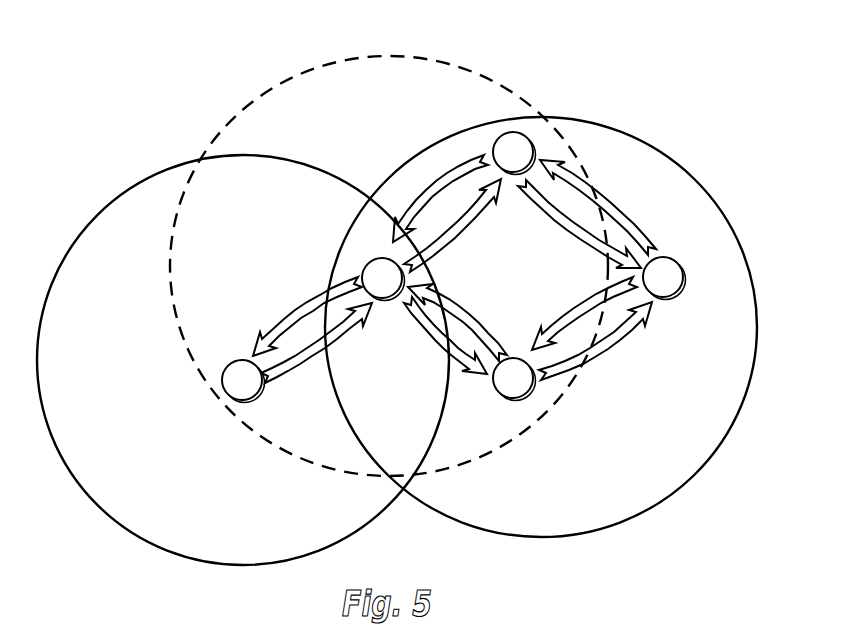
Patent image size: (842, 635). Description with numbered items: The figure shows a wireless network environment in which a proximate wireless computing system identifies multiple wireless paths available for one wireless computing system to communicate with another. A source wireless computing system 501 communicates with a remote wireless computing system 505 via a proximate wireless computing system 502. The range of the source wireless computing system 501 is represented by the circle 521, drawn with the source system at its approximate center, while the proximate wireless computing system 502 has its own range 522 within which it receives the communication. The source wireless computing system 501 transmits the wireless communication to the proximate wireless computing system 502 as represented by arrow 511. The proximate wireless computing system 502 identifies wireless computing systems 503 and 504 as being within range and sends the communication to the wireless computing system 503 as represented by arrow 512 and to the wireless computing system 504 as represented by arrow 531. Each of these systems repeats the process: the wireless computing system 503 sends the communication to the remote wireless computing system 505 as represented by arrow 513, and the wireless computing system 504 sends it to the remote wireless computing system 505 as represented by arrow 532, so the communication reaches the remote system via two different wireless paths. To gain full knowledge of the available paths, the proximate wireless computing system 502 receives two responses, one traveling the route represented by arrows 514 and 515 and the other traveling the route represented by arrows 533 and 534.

The source wireless computing system 501 is at (226, 390).
The proximate wireless computing system 502 is at (366, 288).
The wireless computing system 503 is at (497, 388).
The wireless computing system 504 is at (497, 162).
The remote wireless computing system 505 is at (647, 287).
The arrow 511 is at (287, 368).
The arrow 512 is at (413, 333).
The arrow 513 is at (608, 346).
The arrow 514 is at (572, 306).
The arrow 515 is at (465, 312).
The circle 521 is at (102, 512).
The range 522 is at (270, 90).
The arrow 531 is at (459, 230).
The arrow 532 is at (555, 213).
The arrow 533 is at (612, 207).
The arrow 534 is at (452, 183).